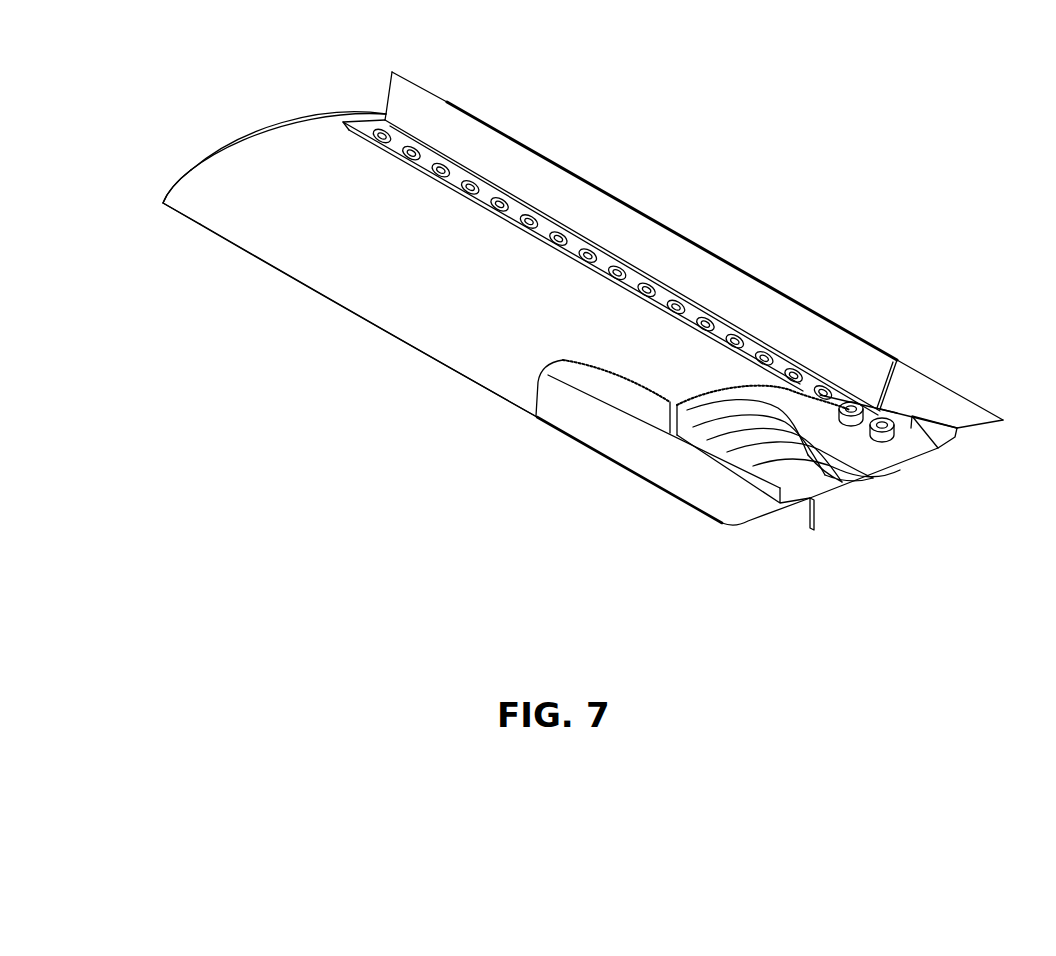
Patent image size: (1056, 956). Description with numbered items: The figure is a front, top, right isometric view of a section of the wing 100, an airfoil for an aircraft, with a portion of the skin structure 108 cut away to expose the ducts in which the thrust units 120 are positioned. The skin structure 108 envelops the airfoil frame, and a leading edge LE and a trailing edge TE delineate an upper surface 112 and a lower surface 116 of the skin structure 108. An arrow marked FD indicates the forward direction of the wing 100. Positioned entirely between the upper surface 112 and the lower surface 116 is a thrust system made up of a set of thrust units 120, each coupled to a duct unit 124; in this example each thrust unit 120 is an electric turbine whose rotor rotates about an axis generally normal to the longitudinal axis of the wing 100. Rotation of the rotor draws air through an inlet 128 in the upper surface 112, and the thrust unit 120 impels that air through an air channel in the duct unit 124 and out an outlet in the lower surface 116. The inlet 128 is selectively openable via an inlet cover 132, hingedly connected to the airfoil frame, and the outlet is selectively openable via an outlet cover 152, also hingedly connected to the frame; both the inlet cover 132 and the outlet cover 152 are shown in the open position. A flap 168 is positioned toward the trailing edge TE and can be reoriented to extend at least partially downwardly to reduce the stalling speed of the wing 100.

The wing 100 is at (150, 139).
The skin structure 108 is at (188, 190).
The upper surface 112 is at (248, 154).
The lower surface 116 is at (354, 347).
The thrust unit 120 is at (893, 452).
The duct unit 124 is at (807, 470).
The inlet 128 is at (672, 300).
The inlet cover 132 is at (423, 107).
The outlet cover 152 is at (797, 513).
The flap 168 is at (923, 388).
The trailing edge TE is at (584, 156).
The leading edge LE is at (222, 257).
The flow direction FD is at (282, 335).